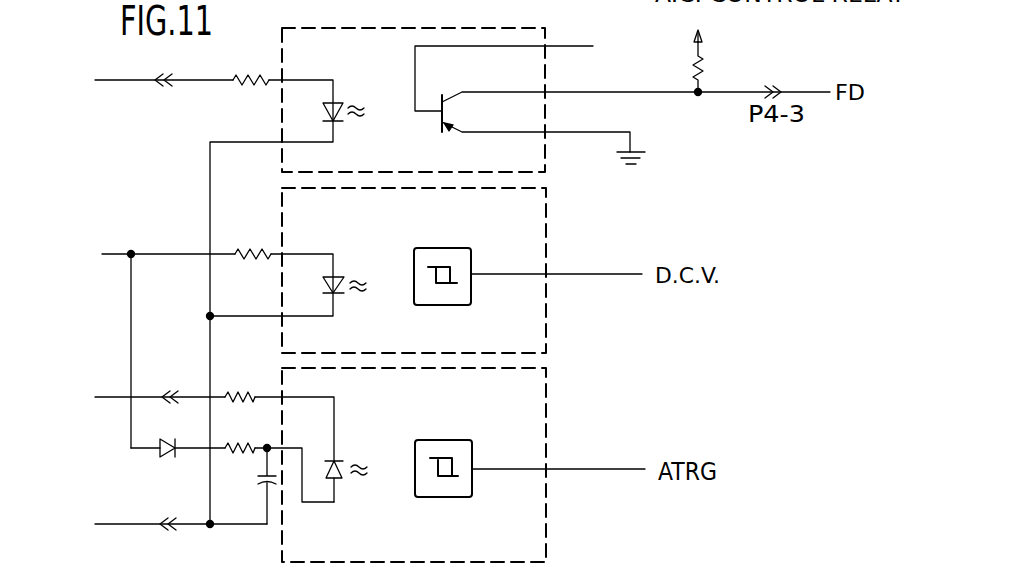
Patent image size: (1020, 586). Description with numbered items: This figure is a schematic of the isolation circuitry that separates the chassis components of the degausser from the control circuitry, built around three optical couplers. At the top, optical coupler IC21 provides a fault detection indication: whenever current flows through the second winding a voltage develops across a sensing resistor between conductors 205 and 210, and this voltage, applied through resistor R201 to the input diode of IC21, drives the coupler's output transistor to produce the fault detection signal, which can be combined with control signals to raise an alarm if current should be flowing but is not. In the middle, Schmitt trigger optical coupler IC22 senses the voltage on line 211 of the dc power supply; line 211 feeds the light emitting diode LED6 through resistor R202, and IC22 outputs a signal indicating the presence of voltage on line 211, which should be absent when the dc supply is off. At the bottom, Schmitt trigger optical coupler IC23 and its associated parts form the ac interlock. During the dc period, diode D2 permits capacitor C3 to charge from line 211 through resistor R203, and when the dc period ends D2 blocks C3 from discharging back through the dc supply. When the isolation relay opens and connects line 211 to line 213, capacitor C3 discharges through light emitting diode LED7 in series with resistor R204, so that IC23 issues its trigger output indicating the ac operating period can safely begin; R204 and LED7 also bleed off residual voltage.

The conductor 205 is at (112, 80).
The line 211 is at (117, 253).
The line 213 is at (112, 395).
The conductor 210 is at (113, 522).
The optical coupler IC21 is at (413, 100).
The Schmitt trigger optical coupler IC22 is at (414, 270).
The Schmitt trigger optical coupler IC23 is at (414, 465).
The resistor R201 is at (249, 88).
The resistor R202 is at (248, 261).
The resistor R203 is at (248, 432).
The resistor R204 is at (240, 391).
The diode D2 is at (171, 460).
The capacitor C3 is at (263, 486).
The light emitting diode LED6 is at (340, 295).
The light emitting diode LED7 is at (341, 480).